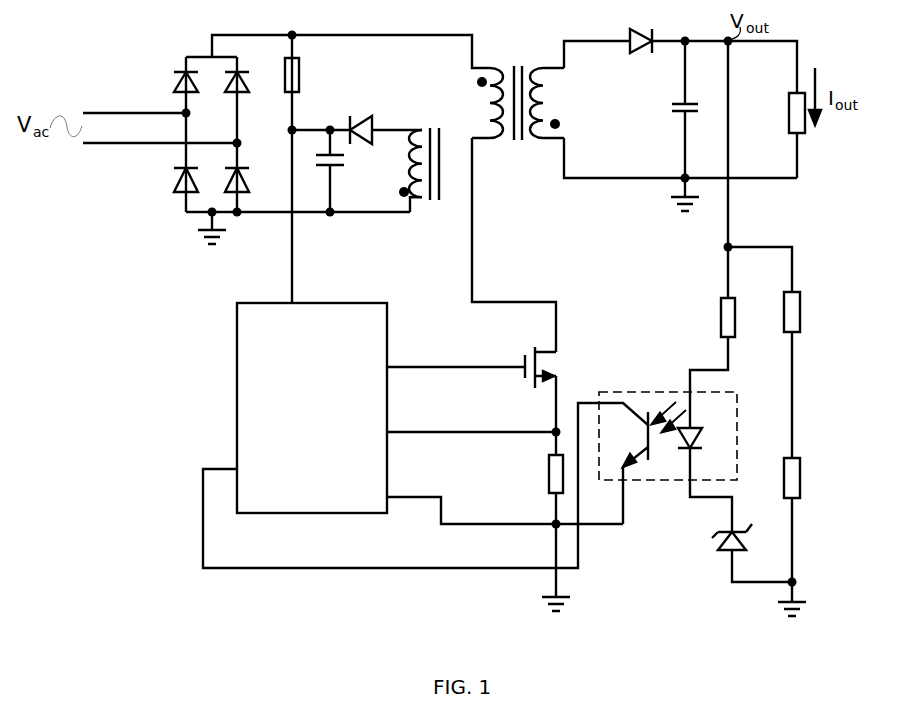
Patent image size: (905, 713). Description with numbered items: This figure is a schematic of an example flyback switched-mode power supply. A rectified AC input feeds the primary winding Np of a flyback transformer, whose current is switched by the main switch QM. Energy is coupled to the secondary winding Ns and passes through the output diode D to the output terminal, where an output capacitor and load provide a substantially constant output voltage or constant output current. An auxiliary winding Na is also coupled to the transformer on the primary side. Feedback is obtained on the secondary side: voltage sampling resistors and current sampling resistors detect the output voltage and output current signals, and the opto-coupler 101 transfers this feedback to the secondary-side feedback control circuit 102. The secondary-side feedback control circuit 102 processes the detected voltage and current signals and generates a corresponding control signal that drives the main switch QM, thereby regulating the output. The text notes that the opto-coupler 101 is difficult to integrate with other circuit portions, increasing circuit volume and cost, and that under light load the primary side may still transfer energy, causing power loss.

The secondary-side feedback control circuit 102 is at (319, 426).
The opto-coupler 101 is at (732, 475).
The output rectifier diode D is at (637, 31).
The main switch QM is at (556, 341).
The primary winding Np is at (495, 106).
The secondary winding Ns is at (543, 101).
The auxiliary winding Na is at (413, 201).